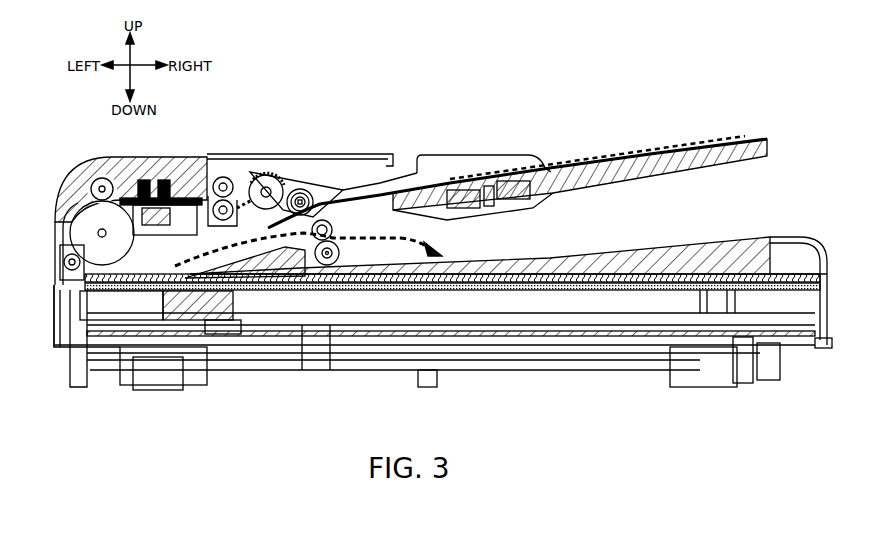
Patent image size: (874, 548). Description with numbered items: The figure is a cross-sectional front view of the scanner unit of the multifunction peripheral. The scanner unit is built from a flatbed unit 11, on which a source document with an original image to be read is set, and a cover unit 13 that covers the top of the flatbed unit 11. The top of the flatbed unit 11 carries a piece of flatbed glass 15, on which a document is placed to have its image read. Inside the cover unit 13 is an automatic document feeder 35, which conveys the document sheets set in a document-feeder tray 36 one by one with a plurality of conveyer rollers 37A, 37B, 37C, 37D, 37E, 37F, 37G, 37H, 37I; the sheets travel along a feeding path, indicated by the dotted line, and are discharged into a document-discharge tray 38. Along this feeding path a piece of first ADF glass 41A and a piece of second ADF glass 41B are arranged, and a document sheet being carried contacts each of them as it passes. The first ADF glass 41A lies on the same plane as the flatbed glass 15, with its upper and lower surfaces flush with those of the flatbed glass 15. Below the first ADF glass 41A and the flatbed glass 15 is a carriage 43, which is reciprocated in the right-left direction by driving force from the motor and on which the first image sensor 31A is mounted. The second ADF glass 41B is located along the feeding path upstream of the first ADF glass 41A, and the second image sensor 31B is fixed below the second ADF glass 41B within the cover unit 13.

The flatbed unit 11 is at (825, 338).
The cover unit 13 is at (827, 258).
The flatbed glass 15 is at (390, 290).
The first image sensor 31A is at (226, 334).
The second image sensor 31B is at (150, 220).
The automatic document feeder 35 is at (505, 146).
The document-feeder tray 36 is at (453, 155).
The conveyer roller 37A is at (301, 188).
The conveyer roller 37B is at (258, 176).
The conveyer roller 37C is at (222, 176).
The conveyer roller 37D is at (220, 224).
The conveyer roller 37E is at (100, 177).
The conveyer roller 37F is at (72, 206).
The conveyer roller 37G is at (60, 300).
The conveyer roller 37H is at (340, 253).
The conveyer roller 37I is at (333, 229).
The document-discharge tray 38 is at (565, 256).
The first ADF glass 41A is at (136, 294).
The second ADF glass 41B is at (137, 179).
The carriage 43 is at (235, 318).